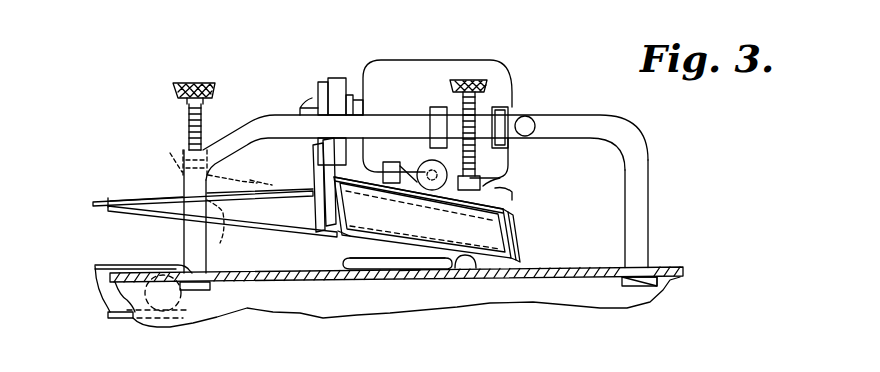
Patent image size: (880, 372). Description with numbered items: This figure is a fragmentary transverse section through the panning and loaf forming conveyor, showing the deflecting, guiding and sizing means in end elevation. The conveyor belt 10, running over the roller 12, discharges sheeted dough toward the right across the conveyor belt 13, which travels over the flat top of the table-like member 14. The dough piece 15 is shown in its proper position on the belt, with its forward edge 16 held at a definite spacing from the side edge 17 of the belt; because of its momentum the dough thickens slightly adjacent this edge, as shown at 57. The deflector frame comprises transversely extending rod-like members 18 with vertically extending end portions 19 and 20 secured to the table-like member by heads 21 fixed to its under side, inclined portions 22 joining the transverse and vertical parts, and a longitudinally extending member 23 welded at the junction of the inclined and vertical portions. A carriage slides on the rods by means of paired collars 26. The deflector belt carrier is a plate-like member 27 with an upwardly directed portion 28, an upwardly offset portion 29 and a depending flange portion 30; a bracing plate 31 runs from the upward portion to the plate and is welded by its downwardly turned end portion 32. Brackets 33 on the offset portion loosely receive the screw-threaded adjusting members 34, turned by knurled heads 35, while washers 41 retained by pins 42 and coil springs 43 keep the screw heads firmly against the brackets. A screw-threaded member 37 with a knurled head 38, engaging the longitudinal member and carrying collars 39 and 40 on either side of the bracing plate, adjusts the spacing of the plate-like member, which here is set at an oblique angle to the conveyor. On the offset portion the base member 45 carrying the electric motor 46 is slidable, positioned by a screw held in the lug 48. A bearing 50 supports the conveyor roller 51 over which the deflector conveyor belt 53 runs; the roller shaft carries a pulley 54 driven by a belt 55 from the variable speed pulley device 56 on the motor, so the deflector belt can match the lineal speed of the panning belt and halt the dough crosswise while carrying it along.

The conveyor belt 10 is at (95, 266).
The roller 12 is at (177, 328).
The conveyor belt 13 is at (560, 267).
The table-like member 14 is at (410, 280).
The dough piece 15 is at (370, 262).
The edge 16 is at (470, 270).
The side edge 17 is at (620, 268).
The rod-like members 18 is at (548, 122).
The vertically extending end portion 19 is at (184, 232).
The vertically extending end portion 20 is at (632, 228).
The heads 21 is at (222, 291).
The inclined portions 22 is at (260, 182).
The longitudinally extending member 23 is at (223, 152).
The collars 26 is at (440, 107).
The plate-like member 27 is at (248, 222).
The upwardly directed portion 28 is at (333, 180).
The upwardly offset portion 29 is at (505, 200).
The depending flange portion 30 is at (520, 213).
The bracing plate 31 is at (105, 200).
The downwardly turned end portion 32 is at (150, 196).
The brackets 33 is at (500, 192).
The screw-threaded adjusting members 34 is at (500, 107).
The knurled heads 35 is at (470, 85).
The screw-threaded member 37 is at (203, 122).
The knurled head 38 is at (212, 86).
The collar 39 is at (218, 224).
The collar 40 is at (180, 159).
The washers 41 is at (487, 183).
The pins 42 is at (440, 184).
The coil springs 43 is at (462, 184).
The base member 45 is at (368, 183).
The electric motor 46 is at (395, 73).
The lug 48 is at (387, 184).
The bearing 50 is at (520, 235).
The conveyor roller 51 is at (515, 252).
The conveyor belt 53 is at (345, 236).
The pulley 54 is at (310, 204).
The belt 55 is at (338, 82).
The variable speed pulley device 56 is at (322, 82).
The thickened portion 57 is at (440, 257).